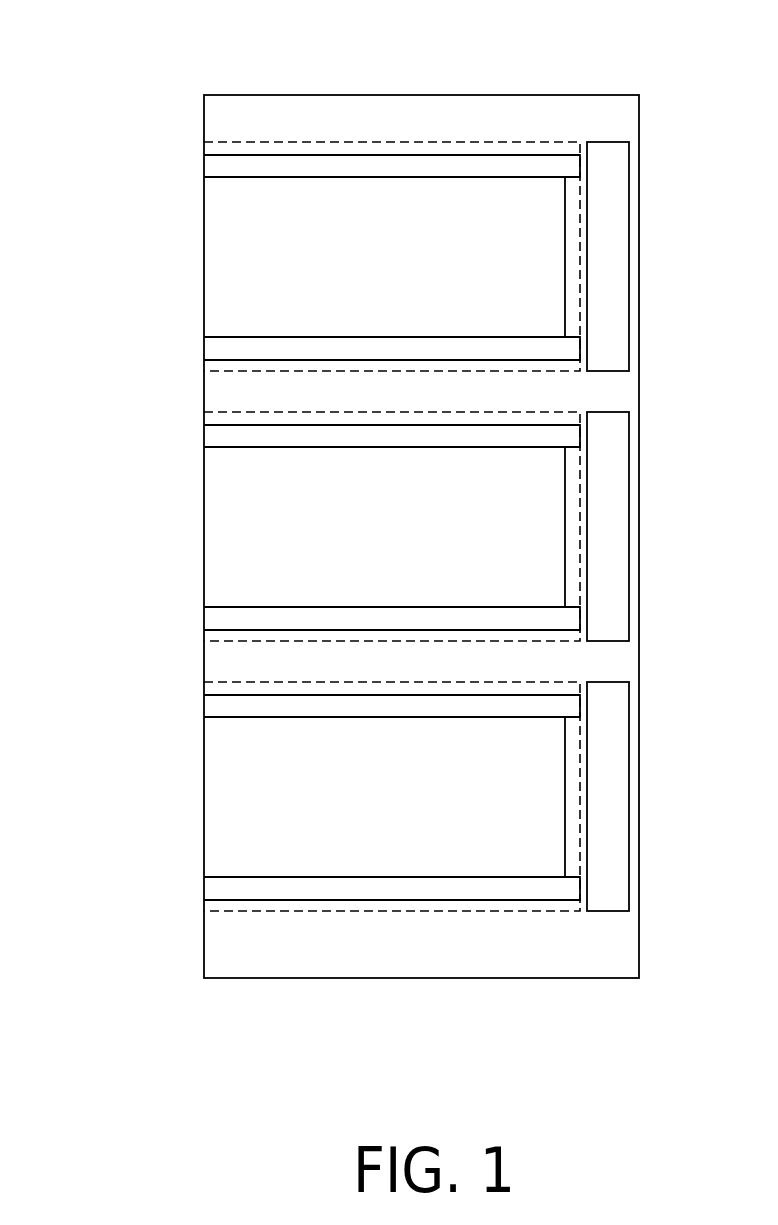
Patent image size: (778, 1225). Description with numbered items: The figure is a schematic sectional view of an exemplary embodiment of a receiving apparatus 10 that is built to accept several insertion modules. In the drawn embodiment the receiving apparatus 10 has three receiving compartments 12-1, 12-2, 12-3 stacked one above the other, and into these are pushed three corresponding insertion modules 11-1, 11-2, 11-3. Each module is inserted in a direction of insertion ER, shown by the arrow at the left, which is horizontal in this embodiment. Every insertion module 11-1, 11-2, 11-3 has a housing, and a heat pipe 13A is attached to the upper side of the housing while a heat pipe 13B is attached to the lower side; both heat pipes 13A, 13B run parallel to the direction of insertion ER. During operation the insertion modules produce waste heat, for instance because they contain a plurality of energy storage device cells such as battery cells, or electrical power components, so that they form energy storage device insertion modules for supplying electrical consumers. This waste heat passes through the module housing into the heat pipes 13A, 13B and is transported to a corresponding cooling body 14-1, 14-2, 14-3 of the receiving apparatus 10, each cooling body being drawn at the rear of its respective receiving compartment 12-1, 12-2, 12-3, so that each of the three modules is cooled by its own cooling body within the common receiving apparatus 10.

The receiving apparatus 10 is at (648, 82).
The insertion module 11-1 is at (384, 257).
The insertion module 11-2 is at (384, 527).
The insertion module 11-3 is at (384, 797).
The receiving compartment 12-1 is at (523, 142).
The receiving compartment 12-2 is at (523, 412).
The receiving compartment 12-3 is at (523, 682).
The heat pipe 13A is at (382, 163).
The heat pipe 13B is at (367, 350).
The cooling body 14-1 is at (608, 256).
The cooling body 14-2 is at (608, 526).
The cooling body 14-3 is at (608, 796).
The direction of insertion ER is at (128, 250).